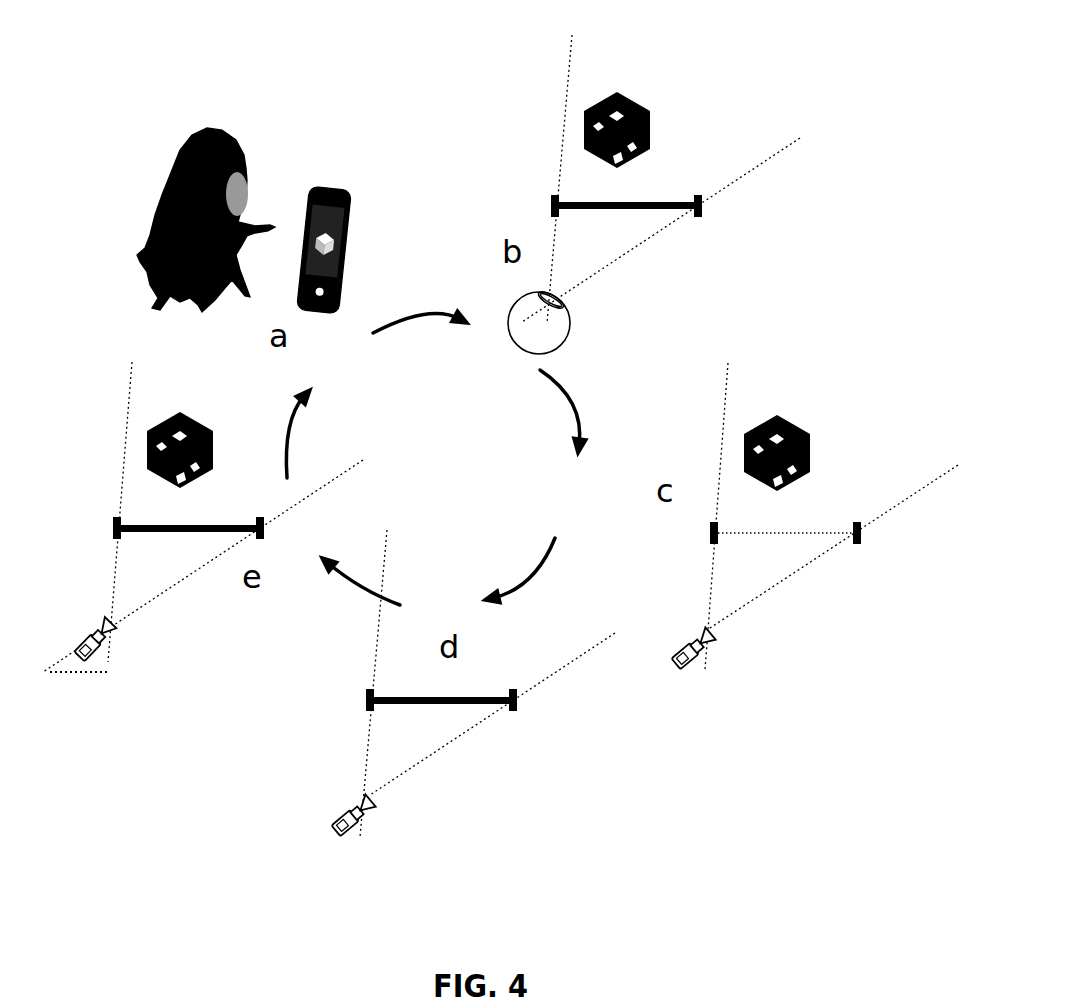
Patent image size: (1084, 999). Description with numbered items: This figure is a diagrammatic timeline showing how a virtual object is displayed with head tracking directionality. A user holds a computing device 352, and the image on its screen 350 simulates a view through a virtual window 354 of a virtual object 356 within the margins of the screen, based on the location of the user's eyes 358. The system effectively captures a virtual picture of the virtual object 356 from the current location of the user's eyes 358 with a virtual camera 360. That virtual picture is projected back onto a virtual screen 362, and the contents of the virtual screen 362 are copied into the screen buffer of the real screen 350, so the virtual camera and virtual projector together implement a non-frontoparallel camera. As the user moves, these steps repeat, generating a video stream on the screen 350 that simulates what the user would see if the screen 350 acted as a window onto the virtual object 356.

The screen 350 is at (320, 197).
The computing device 352 is at (348, 230).
The virtual window 354 is at (648, 196).
The virtual object 356 is at (620, 95).
The user's eyes 358 is at (563, 305).
The virtual camera 360 is at (703, 653).
The virtual screen 362 is at (818, 528).